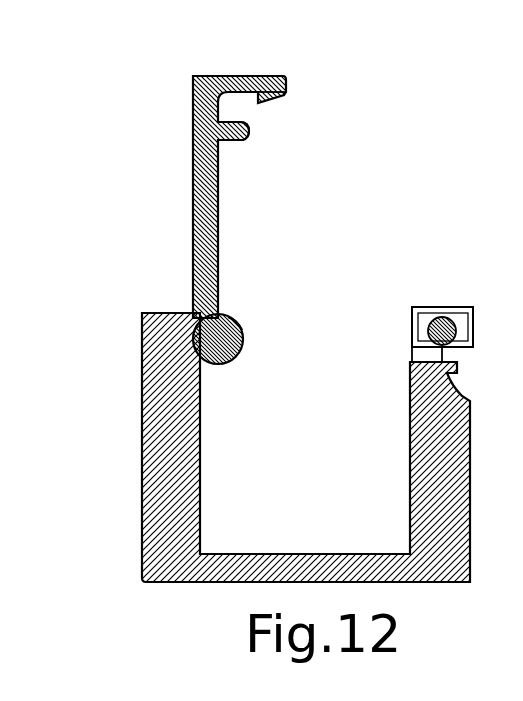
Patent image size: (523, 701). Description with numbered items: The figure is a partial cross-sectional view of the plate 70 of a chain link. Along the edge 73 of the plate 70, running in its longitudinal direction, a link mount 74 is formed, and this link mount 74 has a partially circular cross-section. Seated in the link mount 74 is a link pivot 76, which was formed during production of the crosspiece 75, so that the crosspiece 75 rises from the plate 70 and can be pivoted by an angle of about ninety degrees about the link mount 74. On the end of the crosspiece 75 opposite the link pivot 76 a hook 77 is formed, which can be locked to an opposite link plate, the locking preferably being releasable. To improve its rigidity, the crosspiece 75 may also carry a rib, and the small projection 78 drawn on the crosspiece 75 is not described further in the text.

The channel body 70 is at (200, 428).
The top surface of channel wall 73 is at (160, 312).
The rod 74 is at (243, 347).
The upright bar 75 is at (192, 192).
The joint between bar and rod 76 is at (238, 322).
The top flange 77 is at (250, 77).
The projection 78 is at (244, 141).